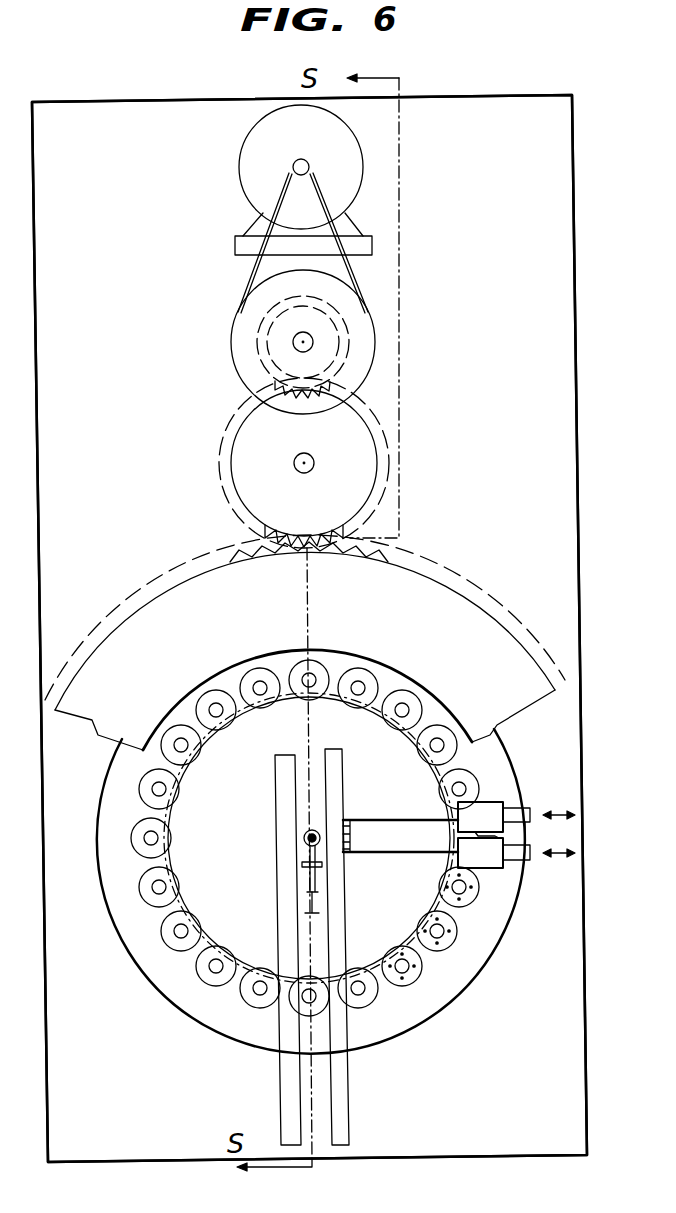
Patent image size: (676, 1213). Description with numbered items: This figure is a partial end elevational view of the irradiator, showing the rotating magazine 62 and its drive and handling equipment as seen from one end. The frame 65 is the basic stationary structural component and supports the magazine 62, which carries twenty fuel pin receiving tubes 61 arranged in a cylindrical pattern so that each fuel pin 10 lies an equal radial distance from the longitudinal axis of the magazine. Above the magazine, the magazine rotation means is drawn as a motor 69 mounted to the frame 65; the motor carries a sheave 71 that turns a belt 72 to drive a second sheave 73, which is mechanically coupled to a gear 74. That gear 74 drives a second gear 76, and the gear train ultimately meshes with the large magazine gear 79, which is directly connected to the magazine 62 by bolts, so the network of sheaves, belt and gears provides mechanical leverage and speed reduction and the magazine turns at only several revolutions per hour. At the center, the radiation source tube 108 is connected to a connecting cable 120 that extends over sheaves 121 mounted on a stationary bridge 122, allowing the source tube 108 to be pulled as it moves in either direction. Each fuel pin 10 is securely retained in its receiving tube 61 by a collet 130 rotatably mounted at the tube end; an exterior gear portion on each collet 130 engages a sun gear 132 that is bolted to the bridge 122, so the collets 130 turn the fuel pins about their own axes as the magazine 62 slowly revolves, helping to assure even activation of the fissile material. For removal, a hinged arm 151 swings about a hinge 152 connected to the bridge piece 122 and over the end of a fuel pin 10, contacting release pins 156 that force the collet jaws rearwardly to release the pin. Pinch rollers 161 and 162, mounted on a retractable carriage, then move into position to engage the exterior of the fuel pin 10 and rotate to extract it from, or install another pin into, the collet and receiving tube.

The fuel pin 10 is at (161, 889).
The fuel pin receiving tube 61 is at (170, 897).
The rotating magazine 62 is at (105, 793).
The frame 65 is at (510, 171).
The motor 69 is at (333, 132).
The sheave 71 is at (305, 164).
The belt 72 is at (330, 205).
The second sheave 73 is at (363, 333).
The gear 74 is at (257, 348).
The second gear 76 is at (243, 438).
The magazine gear 79 is at (453, 610).
The radiation source tube 108 is at (304, 836).
The connecting cable 120 is at (313, 902).
The sheave 121 is at (302, 872).
The stationary bridge 122 is at (340, 1107).
The collet 130 is at (378, 1003).
The sun gear 132 is at (223, 925).
The hinged arm 151 is at (432, 840).
The hinge 152 is at (348, 820).
The release pin 156 is at (442, 944).
The pinch roller 161 is at (487, 810).
The pinch roller 162 is at (493, 870).